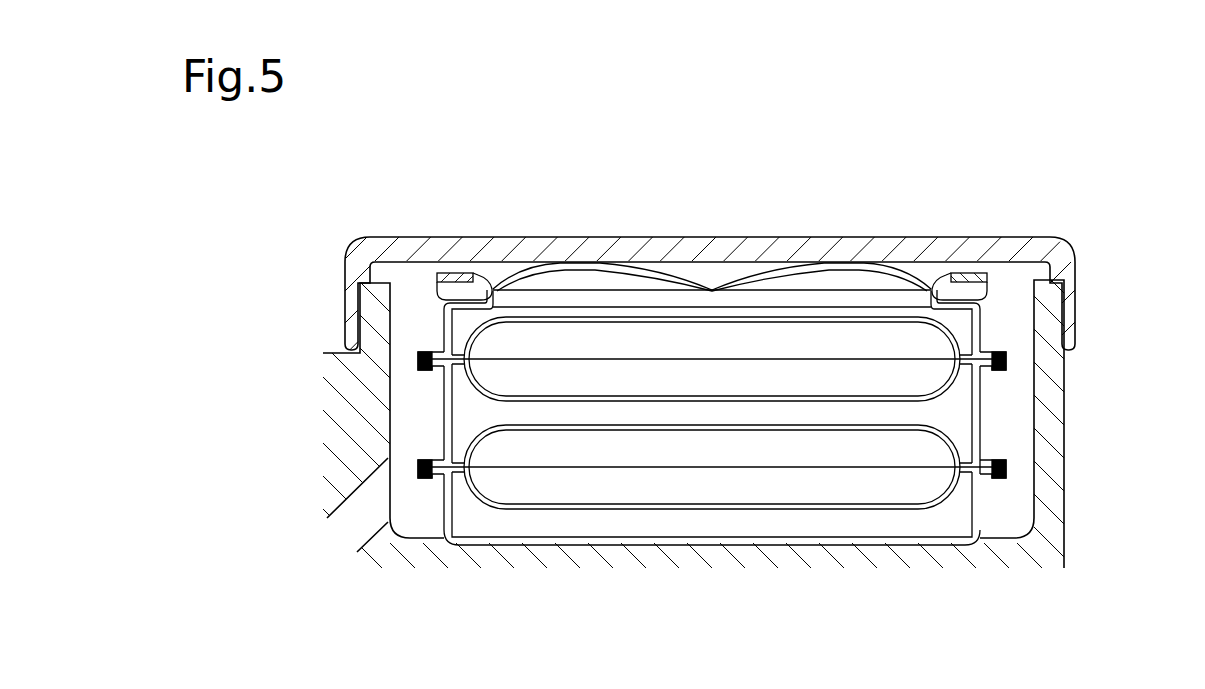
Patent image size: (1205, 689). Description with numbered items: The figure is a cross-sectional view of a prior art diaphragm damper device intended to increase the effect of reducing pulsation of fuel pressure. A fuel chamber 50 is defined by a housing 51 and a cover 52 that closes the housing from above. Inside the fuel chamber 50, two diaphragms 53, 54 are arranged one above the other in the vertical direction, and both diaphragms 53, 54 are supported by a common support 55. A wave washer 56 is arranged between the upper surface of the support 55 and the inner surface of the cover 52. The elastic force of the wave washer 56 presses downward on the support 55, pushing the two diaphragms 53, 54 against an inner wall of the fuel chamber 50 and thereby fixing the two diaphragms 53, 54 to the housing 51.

The fuel chamber 50 is at (1020, 437).
The housing 51 is at (735, 565).
The cover 52 is at (730, 238).
The diaphragm 53 is at (907, 487).
The diaphragm 54 is at (902, 342).
The support 55 is at (983, 422).
The wave washer 56 is at (808, 270).